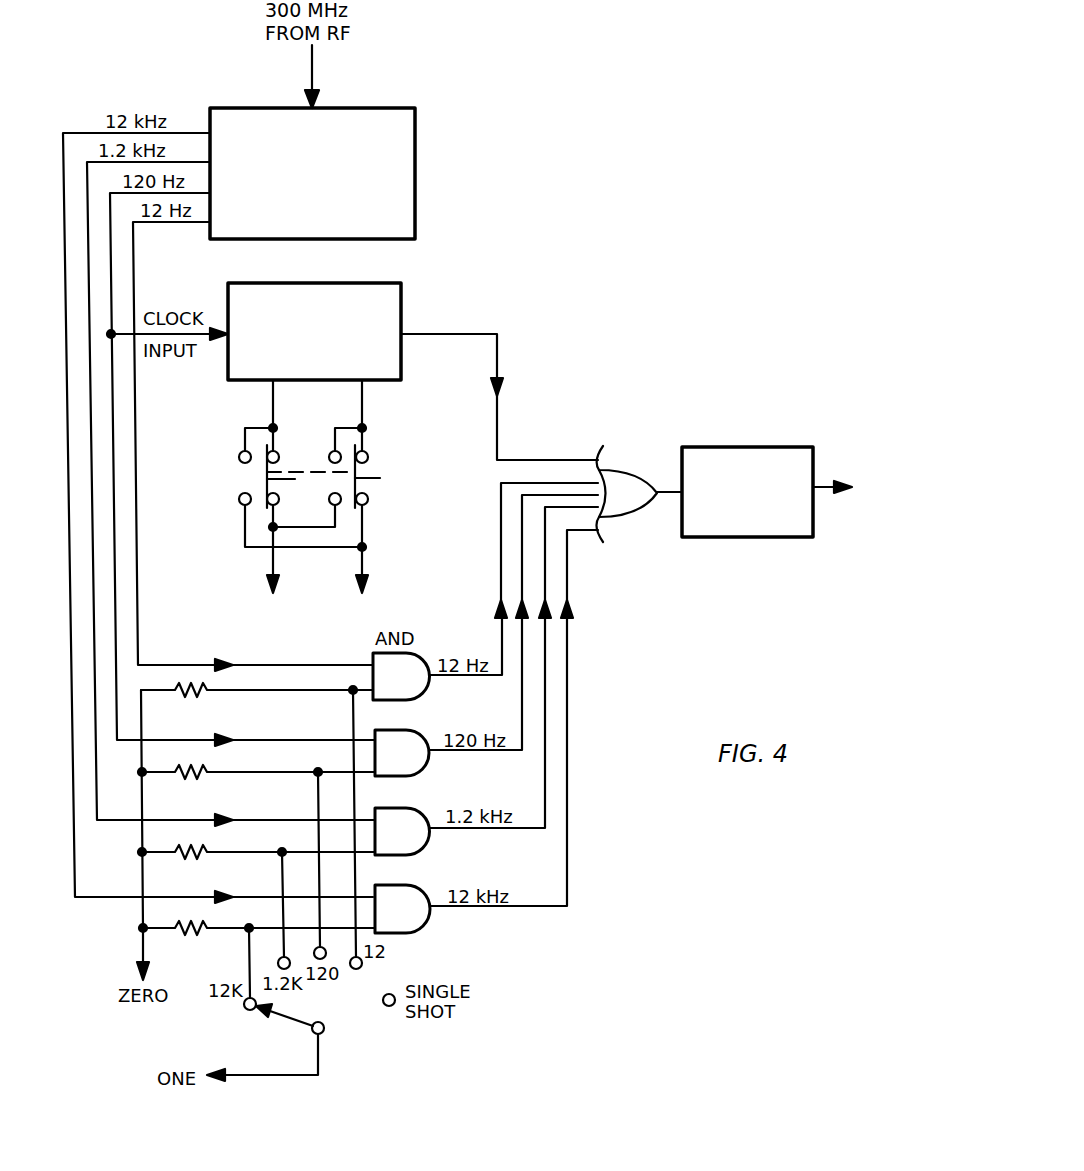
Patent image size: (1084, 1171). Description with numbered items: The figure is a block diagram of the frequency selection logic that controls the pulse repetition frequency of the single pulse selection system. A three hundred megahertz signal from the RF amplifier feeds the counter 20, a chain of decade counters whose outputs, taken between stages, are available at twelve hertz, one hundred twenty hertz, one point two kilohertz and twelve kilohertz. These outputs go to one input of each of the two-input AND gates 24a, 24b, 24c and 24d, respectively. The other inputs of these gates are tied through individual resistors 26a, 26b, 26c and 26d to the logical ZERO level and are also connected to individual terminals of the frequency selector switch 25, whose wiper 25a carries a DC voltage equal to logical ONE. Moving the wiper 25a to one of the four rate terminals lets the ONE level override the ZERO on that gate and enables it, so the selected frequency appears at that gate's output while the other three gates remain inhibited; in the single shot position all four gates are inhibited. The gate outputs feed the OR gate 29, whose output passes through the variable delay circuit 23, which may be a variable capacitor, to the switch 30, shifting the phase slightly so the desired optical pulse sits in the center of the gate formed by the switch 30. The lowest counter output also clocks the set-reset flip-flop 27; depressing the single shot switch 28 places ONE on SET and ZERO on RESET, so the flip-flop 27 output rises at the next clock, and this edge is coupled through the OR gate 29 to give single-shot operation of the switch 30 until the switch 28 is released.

The counter 20 is at (415, 130).
The set-reset flip-flop 27 is at (401, 293).
The single shot switch 28 is at (376, 480).
The OR gate 29 is at (627, 468).
The variable delay circuit 23 is at (775, 447).
The switch 30 is at (873, 487).
The AND gate 24a is at (401, 676).
The AND gate 24b is at (402, 753).
The AND gate 24c is at (402, 831).
The AND gate 24d is at (402, 909).
The resistor 26a is at (257, 703).
The resistor 26b is at (258, 784).
The resistor 26c is at (258, 863).
The resistor 26d is at (259, 939).
The frequency selector switch 25 is at (265, 1061).
The wiper 25a is at (290, 1020).